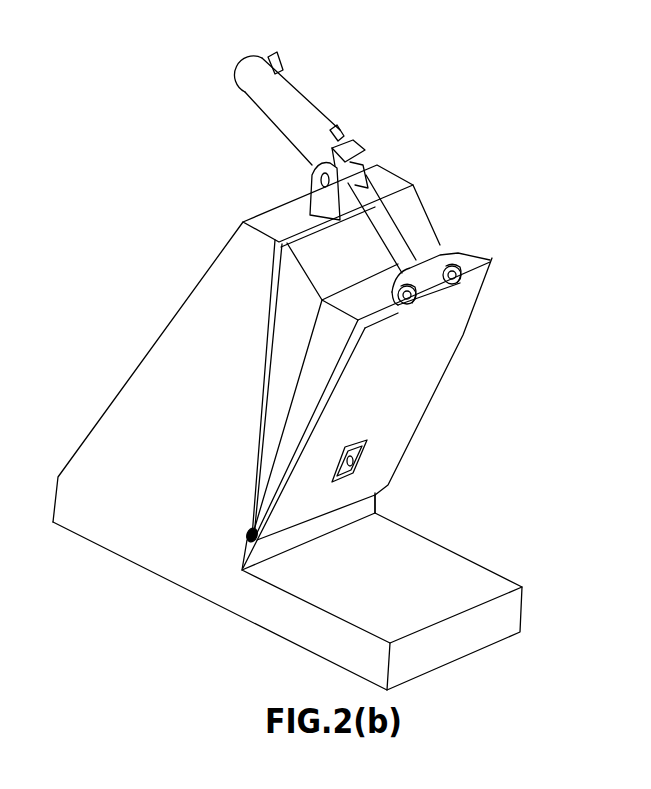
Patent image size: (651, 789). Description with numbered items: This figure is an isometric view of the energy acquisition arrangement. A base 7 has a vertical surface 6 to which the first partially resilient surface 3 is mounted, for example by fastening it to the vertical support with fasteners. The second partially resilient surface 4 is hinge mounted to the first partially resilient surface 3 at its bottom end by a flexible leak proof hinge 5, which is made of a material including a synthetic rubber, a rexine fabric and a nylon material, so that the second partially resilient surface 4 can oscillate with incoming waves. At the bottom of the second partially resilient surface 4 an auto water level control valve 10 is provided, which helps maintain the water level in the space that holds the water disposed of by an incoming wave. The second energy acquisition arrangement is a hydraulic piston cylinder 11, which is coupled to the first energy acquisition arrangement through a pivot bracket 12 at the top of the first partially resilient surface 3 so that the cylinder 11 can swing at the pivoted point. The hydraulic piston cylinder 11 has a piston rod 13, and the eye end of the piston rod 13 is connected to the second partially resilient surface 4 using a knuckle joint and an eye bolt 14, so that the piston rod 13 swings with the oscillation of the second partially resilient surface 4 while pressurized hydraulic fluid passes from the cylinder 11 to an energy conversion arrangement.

The first partially resilient surface 3 is at (375, 197).
The second partially resilient surface 4 is at (427, 330).
The flexible leak proof hinge 5 is at (250, 540).
The vertical surface 6 is at (247, 387).
The base 7 is at (320, 628).
The auto water level control valve 10 is at (363, 452).
The hydraulic piston cylinder 11 is at (285, 88).
The pivot bracket 12 is at (350, 153).
The piston rod 13 is at (387, 229).
The eye bolt 14 is at (480, 262).